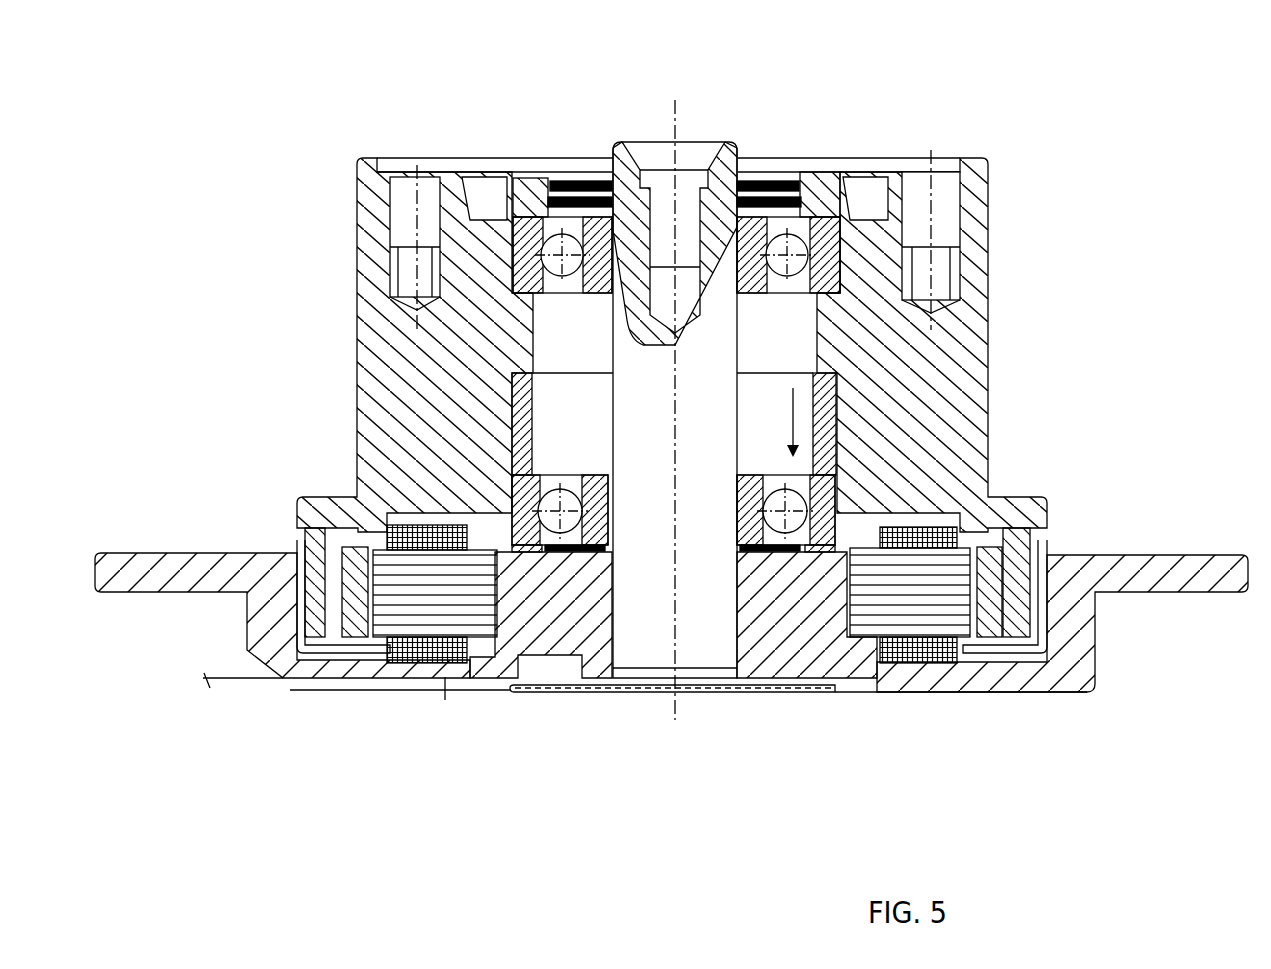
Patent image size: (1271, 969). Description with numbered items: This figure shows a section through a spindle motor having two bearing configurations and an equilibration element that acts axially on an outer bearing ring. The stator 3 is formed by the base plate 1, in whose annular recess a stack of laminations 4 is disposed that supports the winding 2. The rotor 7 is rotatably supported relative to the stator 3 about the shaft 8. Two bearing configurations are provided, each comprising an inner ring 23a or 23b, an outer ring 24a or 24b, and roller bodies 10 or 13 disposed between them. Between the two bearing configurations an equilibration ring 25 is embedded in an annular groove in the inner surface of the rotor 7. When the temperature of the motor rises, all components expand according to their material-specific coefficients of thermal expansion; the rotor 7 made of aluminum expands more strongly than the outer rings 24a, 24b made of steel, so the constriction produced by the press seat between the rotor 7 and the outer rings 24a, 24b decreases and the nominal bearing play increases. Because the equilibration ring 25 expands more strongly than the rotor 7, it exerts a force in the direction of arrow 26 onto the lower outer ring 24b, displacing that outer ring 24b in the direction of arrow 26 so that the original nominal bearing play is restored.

The base plate 1 is at (1063, 640).
The winding 2 is at (932, 663).
The stator 3 is at (992, 700).
The stack of laminations 4 is at (893, 605).
The rotor 7 is at (1000, 472).
The shaft 8 is at (697, 617).
The roller bodies 10 is at (797, 233).
The roller bodies 13 is at (783, 522).
The inner ring 23a is at (762, 195).
The inner ring 23b is at (750, 552).
The outer ring 24a is at (848, 230).
The outer ring 24b is at (827, 549).
The equilibration ring 25 is at (837, 433).
The direction of arrow 26 is at (795, 407).